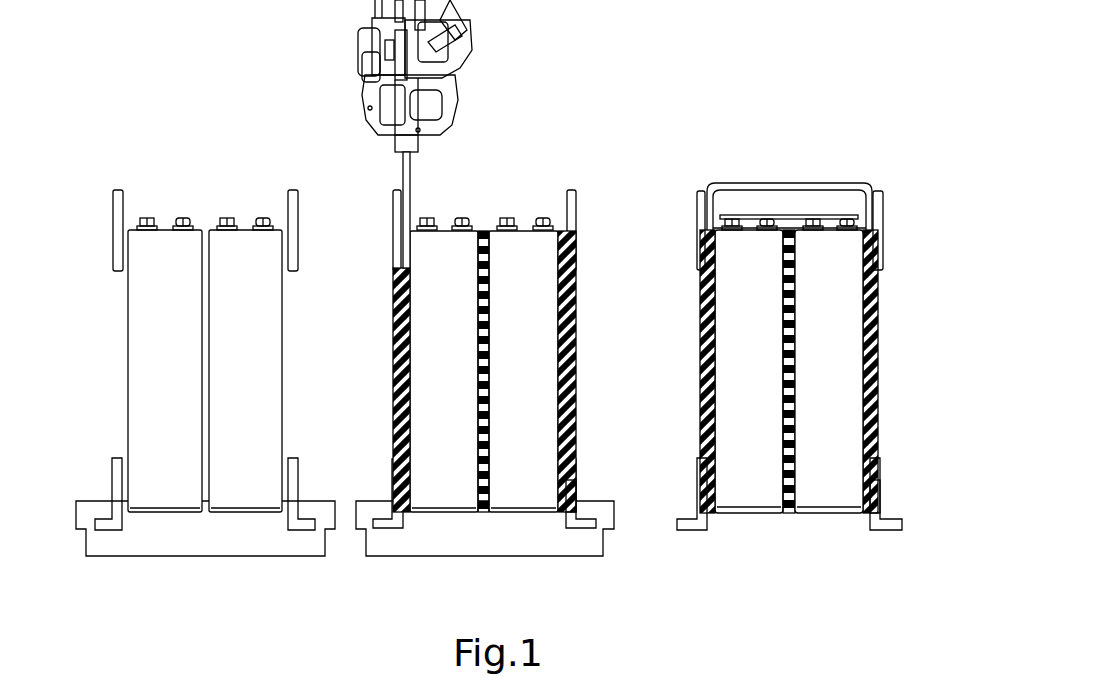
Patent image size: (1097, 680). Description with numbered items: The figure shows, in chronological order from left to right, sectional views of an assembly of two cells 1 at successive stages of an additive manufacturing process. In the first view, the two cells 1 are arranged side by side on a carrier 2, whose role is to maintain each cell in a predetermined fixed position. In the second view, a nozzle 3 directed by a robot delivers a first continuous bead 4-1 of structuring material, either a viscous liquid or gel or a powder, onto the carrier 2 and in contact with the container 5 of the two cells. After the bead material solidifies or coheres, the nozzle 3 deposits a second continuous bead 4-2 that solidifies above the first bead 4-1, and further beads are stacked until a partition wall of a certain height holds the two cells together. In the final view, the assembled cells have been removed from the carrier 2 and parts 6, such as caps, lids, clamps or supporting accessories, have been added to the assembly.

The cell 1 is at (153, 342).
The carrier 2 is at (208, 540).
The nozzle 3 is at (418, 143).
The first continuous bead 4-1 is at (573, 497).
The second continuous bead 4-2 is at (568, 480).
The container 5 is at (525, 483).
The parts 6 is at (789, 215).